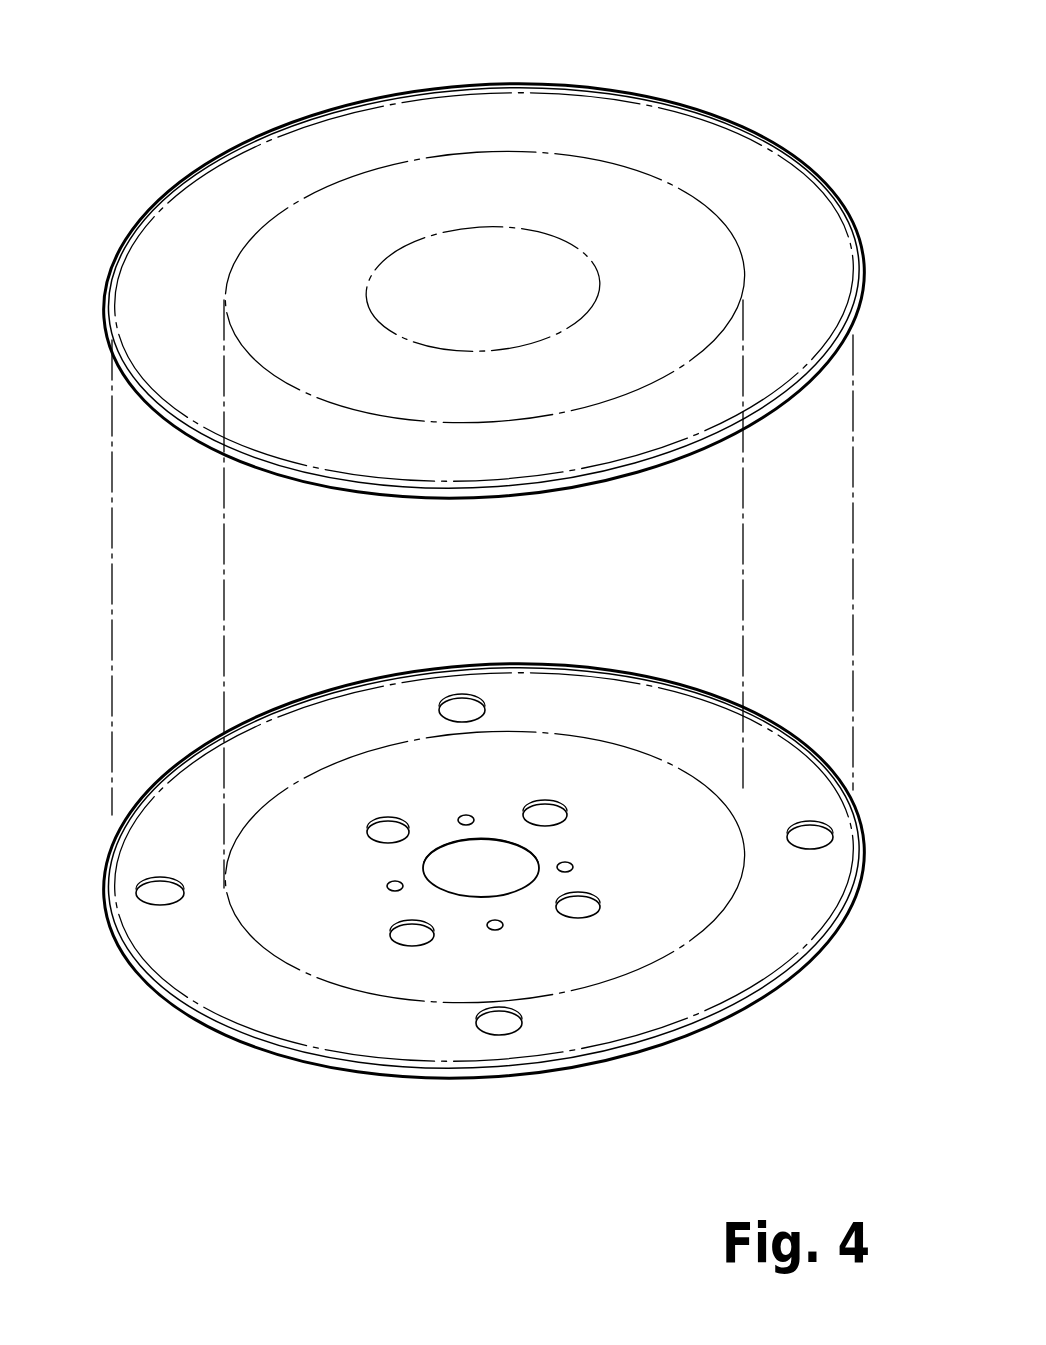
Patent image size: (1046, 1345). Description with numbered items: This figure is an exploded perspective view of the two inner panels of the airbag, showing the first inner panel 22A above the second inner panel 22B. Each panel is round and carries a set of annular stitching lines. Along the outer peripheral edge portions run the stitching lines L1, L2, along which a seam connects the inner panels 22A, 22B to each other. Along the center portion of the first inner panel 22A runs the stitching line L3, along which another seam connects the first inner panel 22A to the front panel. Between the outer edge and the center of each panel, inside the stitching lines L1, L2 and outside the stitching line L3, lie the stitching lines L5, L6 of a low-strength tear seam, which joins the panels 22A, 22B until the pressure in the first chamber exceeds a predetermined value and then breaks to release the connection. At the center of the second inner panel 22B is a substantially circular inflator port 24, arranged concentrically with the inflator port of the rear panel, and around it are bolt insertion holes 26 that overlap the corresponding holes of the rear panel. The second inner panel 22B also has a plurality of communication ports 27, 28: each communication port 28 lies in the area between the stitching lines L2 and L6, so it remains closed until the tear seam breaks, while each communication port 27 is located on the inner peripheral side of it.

The first inner panel 22A is at (310, 120).
The second inner panel 22B is at (322, 1070).
The inflator port 24 is at (522, 890).
The bolt insertion holes 26 is at (467, 815).
The communication port 27 is at (389, 821).
The communication port 28 is at (462, 698).
The stitching line L1 is at (842, 204).
The stitching line L2 is at (757, 965).
The stitching line L3 is at (549, 233).
The stitching line L5 is at (518, 152).
The stitching line L6 is at (628, 975).